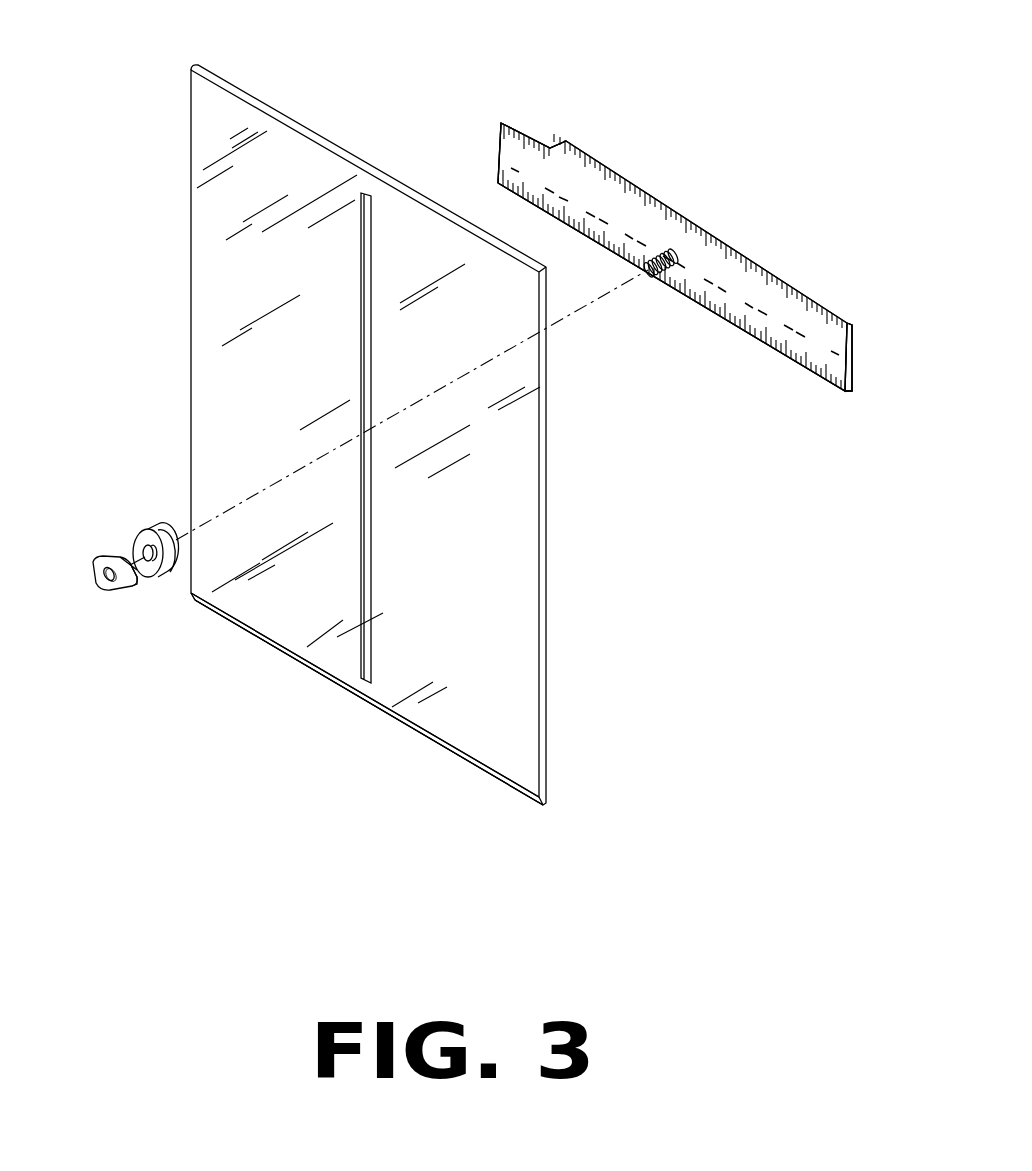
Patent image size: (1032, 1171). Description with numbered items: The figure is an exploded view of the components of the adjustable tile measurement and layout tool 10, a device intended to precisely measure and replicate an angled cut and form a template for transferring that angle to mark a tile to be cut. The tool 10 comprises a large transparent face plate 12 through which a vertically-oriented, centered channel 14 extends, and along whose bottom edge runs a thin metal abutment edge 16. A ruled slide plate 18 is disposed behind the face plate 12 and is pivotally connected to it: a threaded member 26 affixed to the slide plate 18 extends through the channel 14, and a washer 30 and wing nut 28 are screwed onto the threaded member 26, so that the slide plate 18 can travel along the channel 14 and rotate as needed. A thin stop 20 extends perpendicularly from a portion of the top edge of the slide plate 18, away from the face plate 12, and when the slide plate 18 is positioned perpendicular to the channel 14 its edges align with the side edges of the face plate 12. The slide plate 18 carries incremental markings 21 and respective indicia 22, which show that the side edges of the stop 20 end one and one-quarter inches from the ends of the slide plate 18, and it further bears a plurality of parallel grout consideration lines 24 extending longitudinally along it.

The adjustable tile measurement and layout tool 10 is at (731, 124).
The transparent face plate 12 is at (547, 592).
The channel 14 is at (365, 655).
The abutment edge 16 is at (546, 803).
The slide plate 18 is at (637, 185).
The stop 20 is at (815, 296).
The incremental markings 21 is at (708, 314).
The indicia 22 is at (813, 345).
The grout consideration lines 24 is at (500, 140).
The threaded member 26 is at (650, 275).
The wing nut 28 is at (119, 593).
The washer 30 is at (138, 530).